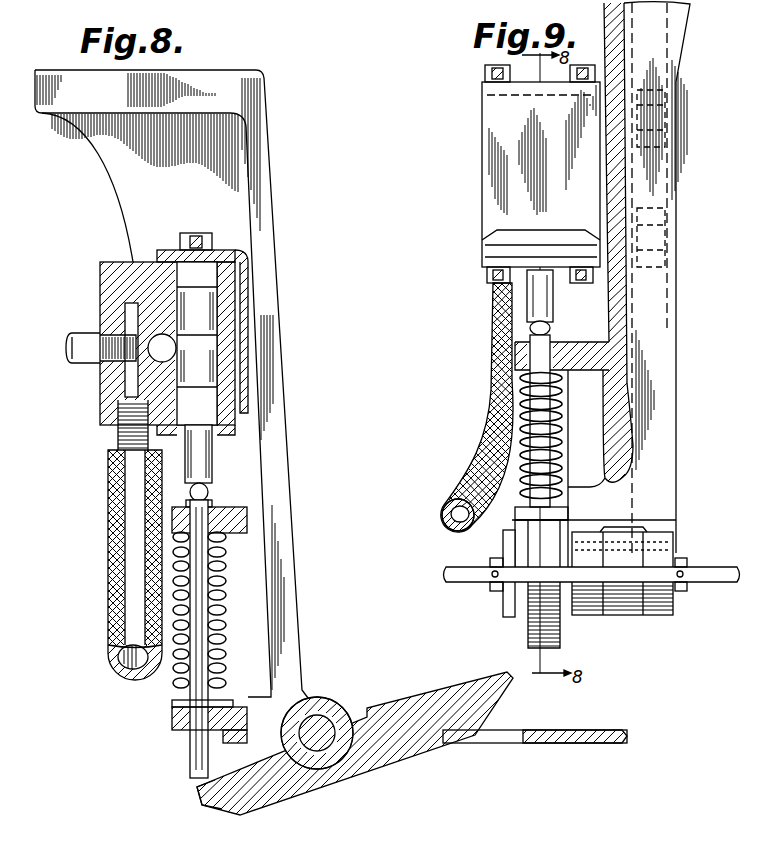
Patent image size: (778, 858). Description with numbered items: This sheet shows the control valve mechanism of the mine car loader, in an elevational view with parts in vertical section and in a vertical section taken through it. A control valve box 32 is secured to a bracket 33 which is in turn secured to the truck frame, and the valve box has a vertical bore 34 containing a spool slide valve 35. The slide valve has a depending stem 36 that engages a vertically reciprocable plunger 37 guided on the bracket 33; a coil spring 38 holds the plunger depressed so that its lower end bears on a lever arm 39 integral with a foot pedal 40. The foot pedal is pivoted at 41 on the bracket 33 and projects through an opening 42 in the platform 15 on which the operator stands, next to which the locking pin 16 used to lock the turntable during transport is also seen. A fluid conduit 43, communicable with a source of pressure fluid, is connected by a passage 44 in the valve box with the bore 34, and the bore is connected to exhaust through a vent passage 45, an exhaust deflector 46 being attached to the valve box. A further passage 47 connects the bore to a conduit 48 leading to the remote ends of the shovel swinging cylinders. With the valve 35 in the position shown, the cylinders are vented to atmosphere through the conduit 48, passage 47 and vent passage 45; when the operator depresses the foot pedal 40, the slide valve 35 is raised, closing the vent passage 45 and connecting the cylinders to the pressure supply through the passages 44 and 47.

In FIG. 8, the platform 15 is at (578, 737).
In FIG. 9, the locking pin 16 is at (725, 556).
In FIG. 8, the control valve box 32 is at (100, 400).
In FIG. 9, the control valve box 32 is at (510, 250).
In FIG. 8, the bracket 33 is at (277, 412).
In FIG. 9, the bracket 33 is at (667, 463).
In FIG. 8, the vertical bore 34 is at (217, 275).
In FIG. 8, the spool slide valve 35 is at (207, 318).
In FIG. 8, the depending stem 36 is at (200, 467).
In FIG. 9, the depending stem 36 is at (542, 300).
In FIG. 8, the plunger 37 is at (202, 517).
In FIG. 9, the plunger 37 is at (535, 355).
In FIG. 8, the coil spring 38 is at (220, 563).
In FIG. 9, the coil spring 38 is at (523, 403).
In FIG. 8, the lever arm 39 is at (228, 792).
In FIG. 8, the foot pedal 40 is at (470, 683).
In FIG. 9, the foot pedal 40 is at (517, 510).
In FIG. 8, the pivot 41 is at (317, 733).
In FIG. 9, the pivot 41 is at (498, 592).
In FIG. 8, the opening 42 is at (507, 737).
In FIG. 8, the fluid conduit 43 is at (125, 623).
In FIG. 9, the fluid conduit 43 is at (478, 480).
In FIG. 8, the passage 44 is at (130, 422).
In FIG. 8, the vent passage 45 is at (227, 377).
In FIG. 8, the exhaust deflector 46 is at (247, 383).
In FIG. 9, the exhaust deflector 46 is at (490, 152).
In FIG. 8, the passage 47 is at (140, 333).
In FIG. 8, the conduit 48 is at (82, 336).